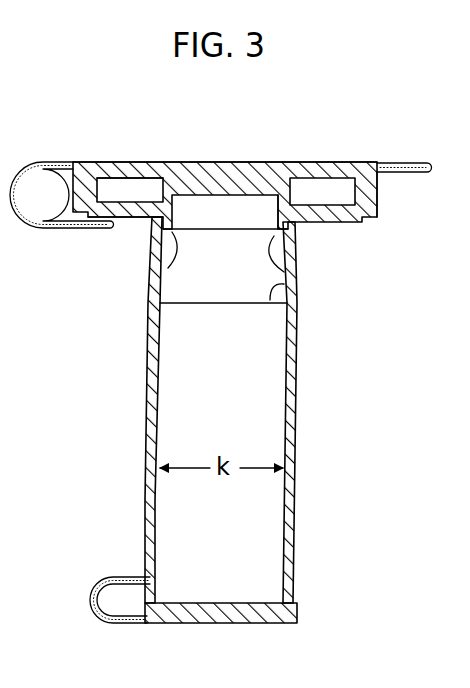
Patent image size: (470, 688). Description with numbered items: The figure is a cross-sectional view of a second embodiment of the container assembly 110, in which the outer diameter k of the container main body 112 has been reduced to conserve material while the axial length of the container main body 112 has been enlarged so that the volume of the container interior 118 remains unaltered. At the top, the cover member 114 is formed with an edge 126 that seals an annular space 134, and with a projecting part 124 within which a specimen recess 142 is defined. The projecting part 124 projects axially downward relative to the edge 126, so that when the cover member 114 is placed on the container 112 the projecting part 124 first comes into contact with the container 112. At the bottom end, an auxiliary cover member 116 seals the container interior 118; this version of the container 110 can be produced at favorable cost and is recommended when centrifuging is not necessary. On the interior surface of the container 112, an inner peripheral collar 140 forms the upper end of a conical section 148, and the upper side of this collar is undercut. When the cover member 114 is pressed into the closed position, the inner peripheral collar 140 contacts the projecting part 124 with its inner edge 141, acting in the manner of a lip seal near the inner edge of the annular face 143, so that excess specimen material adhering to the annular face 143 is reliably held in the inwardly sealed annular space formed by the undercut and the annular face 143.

The container assembly 110 is at (229, 144).
The container main body 112 is at (298, 440).
The cover member 114 is at (188, 159).
The auxiliary cover member 116 is at (241, 627).
The container interior 118 is at (276, 388).
The projecting part 124 is at (151, 190).
The edge 126 is at (375, 190).
The annular space 134 is at (120, 186).
The inner peripheral collar 140 is at (294, 271).
The inner edge 141 is at (152, 267).
The specimen recess 142 is at (172, 205).
The annular face 143 is at (281, 233).
The conical section 148 is at (283, 292).